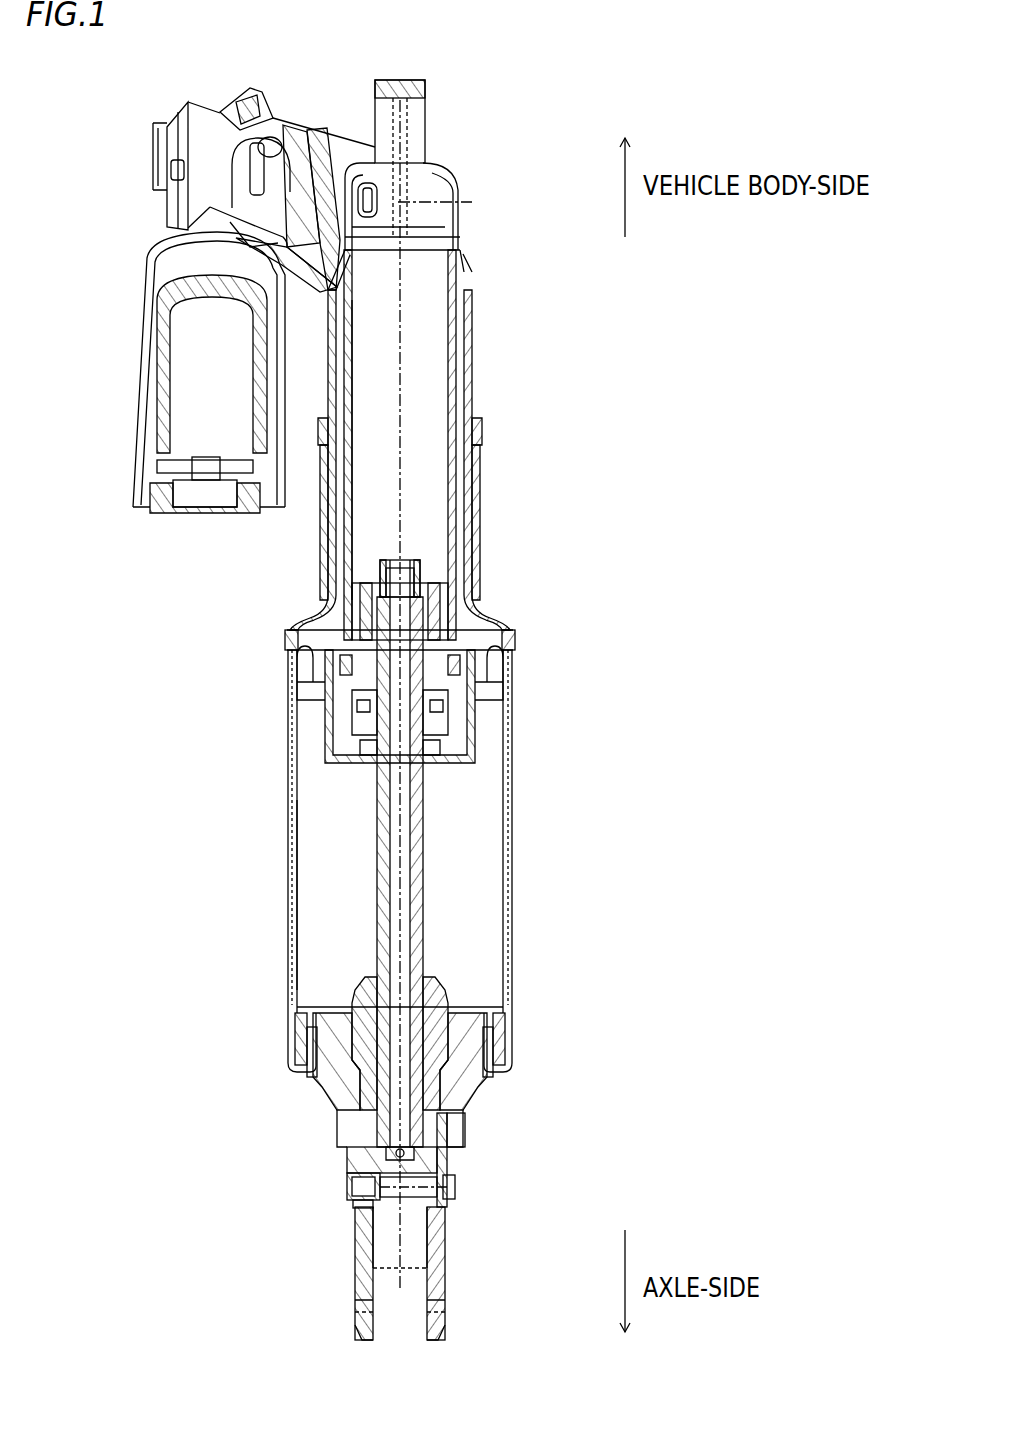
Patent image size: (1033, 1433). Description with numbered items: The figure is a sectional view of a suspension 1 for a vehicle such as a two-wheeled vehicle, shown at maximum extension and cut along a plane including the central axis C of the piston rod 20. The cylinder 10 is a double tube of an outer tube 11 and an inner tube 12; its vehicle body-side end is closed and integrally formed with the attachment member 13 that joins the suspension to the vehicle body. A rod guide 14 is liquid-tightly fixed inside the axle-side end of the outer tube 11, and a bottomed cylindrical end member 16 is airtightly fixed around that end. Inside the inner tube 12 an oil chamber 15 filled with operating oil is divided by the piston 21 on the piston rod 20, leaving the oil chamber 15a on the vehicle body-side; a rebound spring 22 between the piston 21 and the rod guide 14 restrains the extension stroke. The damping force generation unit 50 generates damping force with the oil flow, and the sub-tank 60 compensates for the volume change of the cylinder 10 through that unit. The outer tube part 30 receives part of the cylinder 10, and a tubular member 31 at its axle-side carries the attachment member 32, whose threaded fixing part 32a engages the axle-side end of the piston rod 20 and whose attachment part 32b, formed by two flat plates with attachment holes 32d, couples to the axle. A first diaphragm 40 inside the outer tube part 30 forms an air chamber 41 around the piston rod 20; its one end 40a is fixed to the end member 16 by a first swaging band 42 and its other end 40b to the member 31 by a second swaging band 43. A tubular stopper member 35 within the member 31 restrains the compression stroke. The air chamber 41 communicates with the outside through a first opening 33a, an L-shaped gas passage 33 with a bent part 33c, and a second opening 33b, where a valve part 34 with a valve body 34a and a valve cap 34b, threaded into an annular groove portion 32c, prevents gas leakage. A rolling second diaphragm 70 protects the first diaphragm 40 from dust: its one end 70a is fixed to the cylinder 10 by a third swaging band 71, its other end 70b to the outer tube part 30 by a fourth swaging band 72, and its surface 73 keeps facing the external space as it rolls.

The suspension 1 is at (510, 119).
The attachment member 13 is at (403, 80).
The central axis C is at (444, 203).
The damping force generation unit 50 is at (160, 150).
The sub-tank 60 is at (150, 517).
The cylinder 10 is at (430, 445).
The outer tube 11 is at (473, 322).
The inner tube 12 is at (533, 305).
The third swaging band 71 is at (448, 431).
The one end of the second diaphragm 70a is at (482, 433).
The oil chamber at the vehicle body-side 15a is at (479, 450).
The oil chamber 15 is at (440, 496).
The second diaphragm 70 is at (426, 522).
The surface facing toward the vehicle body-side 73 is at (476, 560).
The piston 21 is at (440, 590).
The fourth swaging band 72 is at (450, 640).
The other end of the second diaphragm 70b is at (515, 640).
The rebound spring 22 is at (345, 665).
The rod guide 14 is at (355, 702).
The first swaging band 42 is at (447, 673).
The one end of the first diaphragm 40a is at (495, 668).
The end member 16 is at (470, 752).
The piston rod 20 is at (420, 818).
The outer tube part 30 is at (513, 862).
The first diaphragm 40 is at (508, 908).
The air chamber 41 is at (495, 953).
The stopper member 35 is at (370, 990).
The second swaging band 43 is at (505, 1034).
The other end of the first diaphragm 40b is at (500, 1060).
The member 31 is at (328, 1100).
The first opening 33a is at (455, 1110).
The valve part 34 is at (339, 1165).
The valve body 34a is at (378, 1172).
The valve cap 34b is at (345, 1185).
The fixing part 32a is at (449, 1150).
The attachment member 32 is at (418, 1242).
The bent part 33c is at (447, 1192).
The gas passage 33 is at (406, 1199).
The second opening 33b is at (353, 1208).
The groove portion 32c is at (400, 1240).
The attachment part 32b is at (353, 1268).
The attachment holes 32d is at (368, 1333).